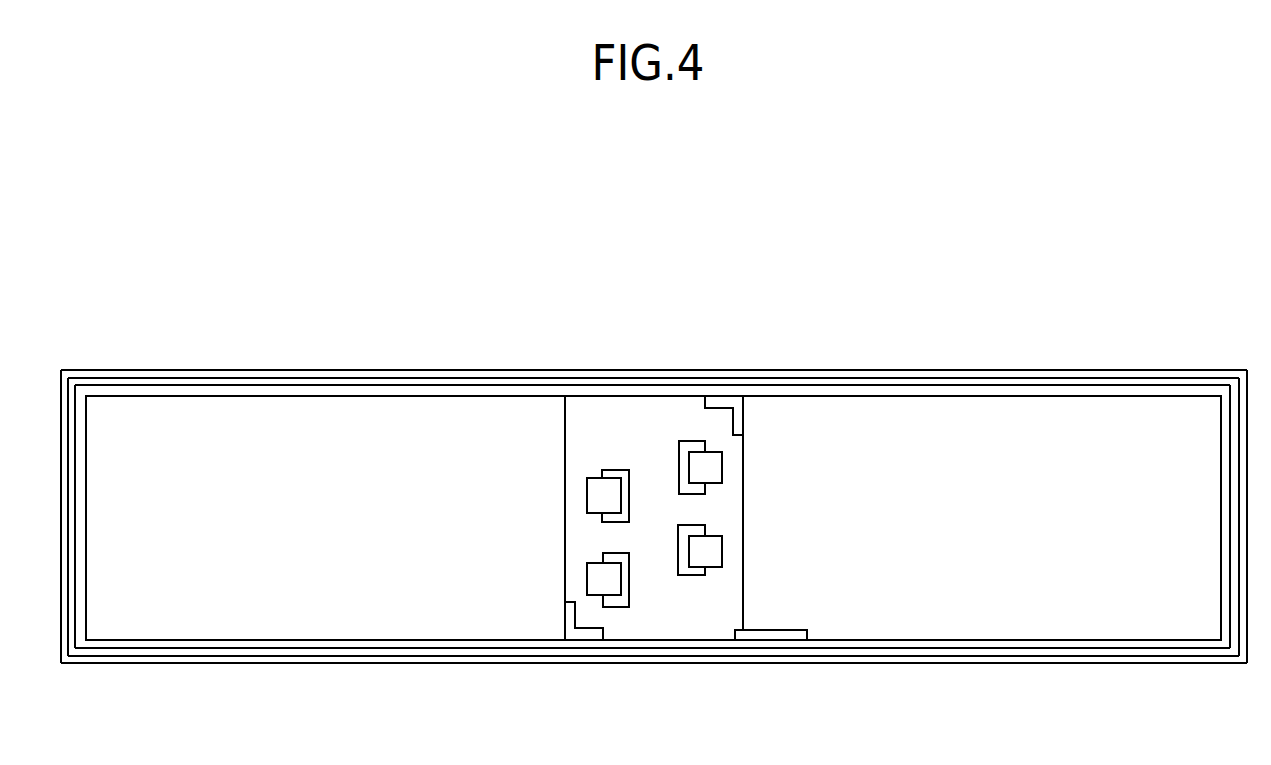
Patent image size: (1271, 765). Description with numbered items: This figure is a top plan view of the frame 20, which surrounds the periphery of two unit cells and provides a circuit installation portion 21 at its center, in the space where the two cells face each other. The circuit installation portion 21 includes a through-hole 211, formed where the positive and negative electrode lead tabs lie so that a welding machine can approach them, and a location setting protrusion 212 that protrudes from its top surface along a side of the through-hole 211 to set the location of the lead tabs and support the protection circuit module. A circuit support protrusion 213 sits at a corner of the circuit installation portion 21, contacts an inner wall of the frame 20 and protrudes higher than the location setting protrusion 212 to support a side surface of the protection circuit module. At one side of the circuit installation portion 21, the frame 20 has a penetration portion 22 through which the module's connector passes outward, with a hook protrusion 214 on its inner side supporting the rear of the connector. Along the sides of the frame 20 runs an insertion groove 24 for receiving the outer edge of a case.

The frame 20 is at (737, 283).
The circuit installation portion 21 is at (585, 442).
The penetration portion 22 is at (802, 655).
The insertion groove 24 is at (925, 385).
The through-hole 211 is at (593, 497).
The location setting protrusion 212 is at (615, 470).
The circuit support protrusion 213 is at (745, 420).
The hook protrusion 214 is at (790, 630).